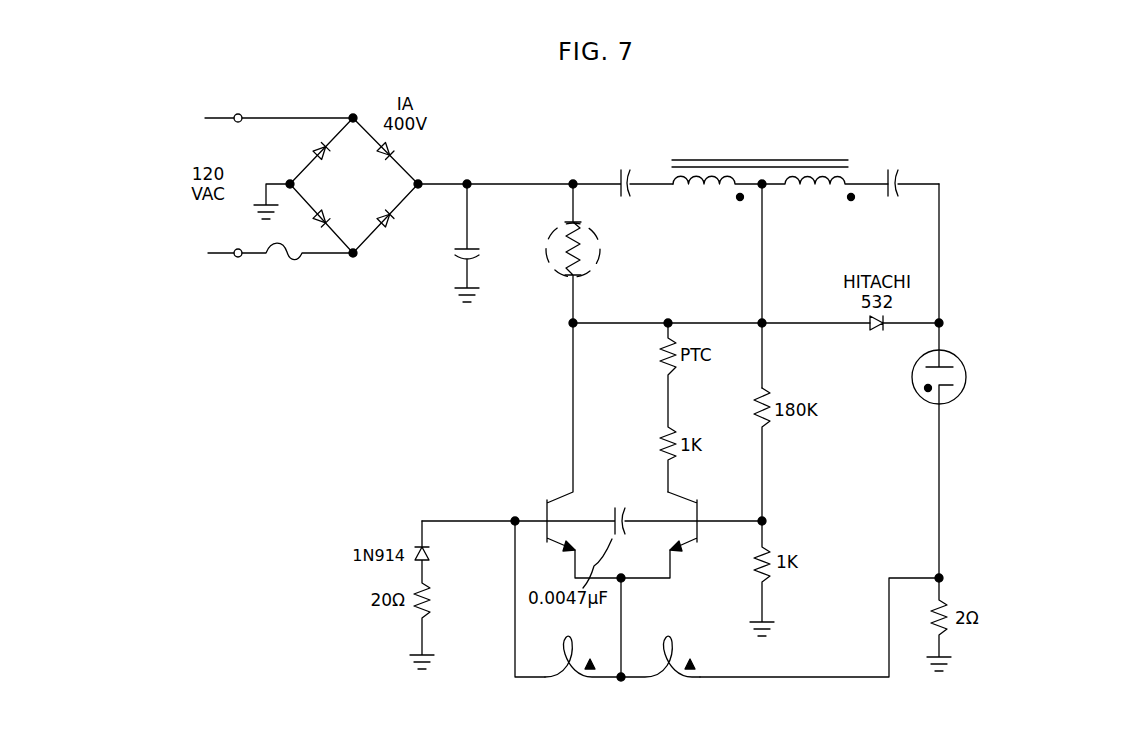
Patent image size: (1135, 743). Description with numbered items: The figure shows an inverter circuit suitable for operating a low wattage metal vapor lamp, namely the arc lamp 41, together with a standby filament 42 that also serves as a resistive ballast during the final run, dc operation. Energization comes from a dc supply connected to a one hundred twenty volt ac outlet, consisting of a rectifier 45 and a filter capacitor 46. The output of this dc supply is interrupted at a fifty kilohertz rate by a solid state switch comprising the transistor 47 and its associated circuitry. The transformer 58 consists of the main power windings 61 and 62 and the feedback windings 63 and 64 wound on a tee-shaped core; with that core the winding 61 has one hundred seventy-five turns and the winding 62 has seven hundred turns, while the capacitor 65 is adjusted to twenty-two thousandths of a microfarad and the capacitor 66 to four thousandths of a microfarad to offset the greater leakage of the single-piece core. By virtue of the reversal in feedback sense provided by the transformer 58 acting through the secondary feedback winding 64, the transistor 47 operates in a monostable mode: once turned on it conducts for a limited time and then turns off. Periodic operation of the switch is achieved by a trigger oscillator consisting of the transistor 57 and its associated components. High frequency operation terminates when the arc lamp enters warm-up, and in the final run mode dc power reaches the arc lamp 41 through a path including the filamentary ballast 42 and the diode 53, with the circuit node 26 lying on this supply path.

The rectifier 45 is at (341, 196).
The filter capacitor 46 is at (460, 243).
The standby filament 42 is at (558, 271).
The capacitor 65 is at (627, 199).
The transformer 58 is at (752, 129).
The main power winding 61 is at (702, 198).
The main power winding 62 is at (808, 198).
The capacitor 66 is at (895, 199).
The circuit node 26 is at (758, 318).
The diode 53 is at (869, 334).
The arc lamp 41 is at (925, 406).
The transistor 47 is at (566, 486).
The transistor 57 is at (700, 546).
The feedback winding 64 is at (578, 645).
The feedback winding 63 is at (678, 645).